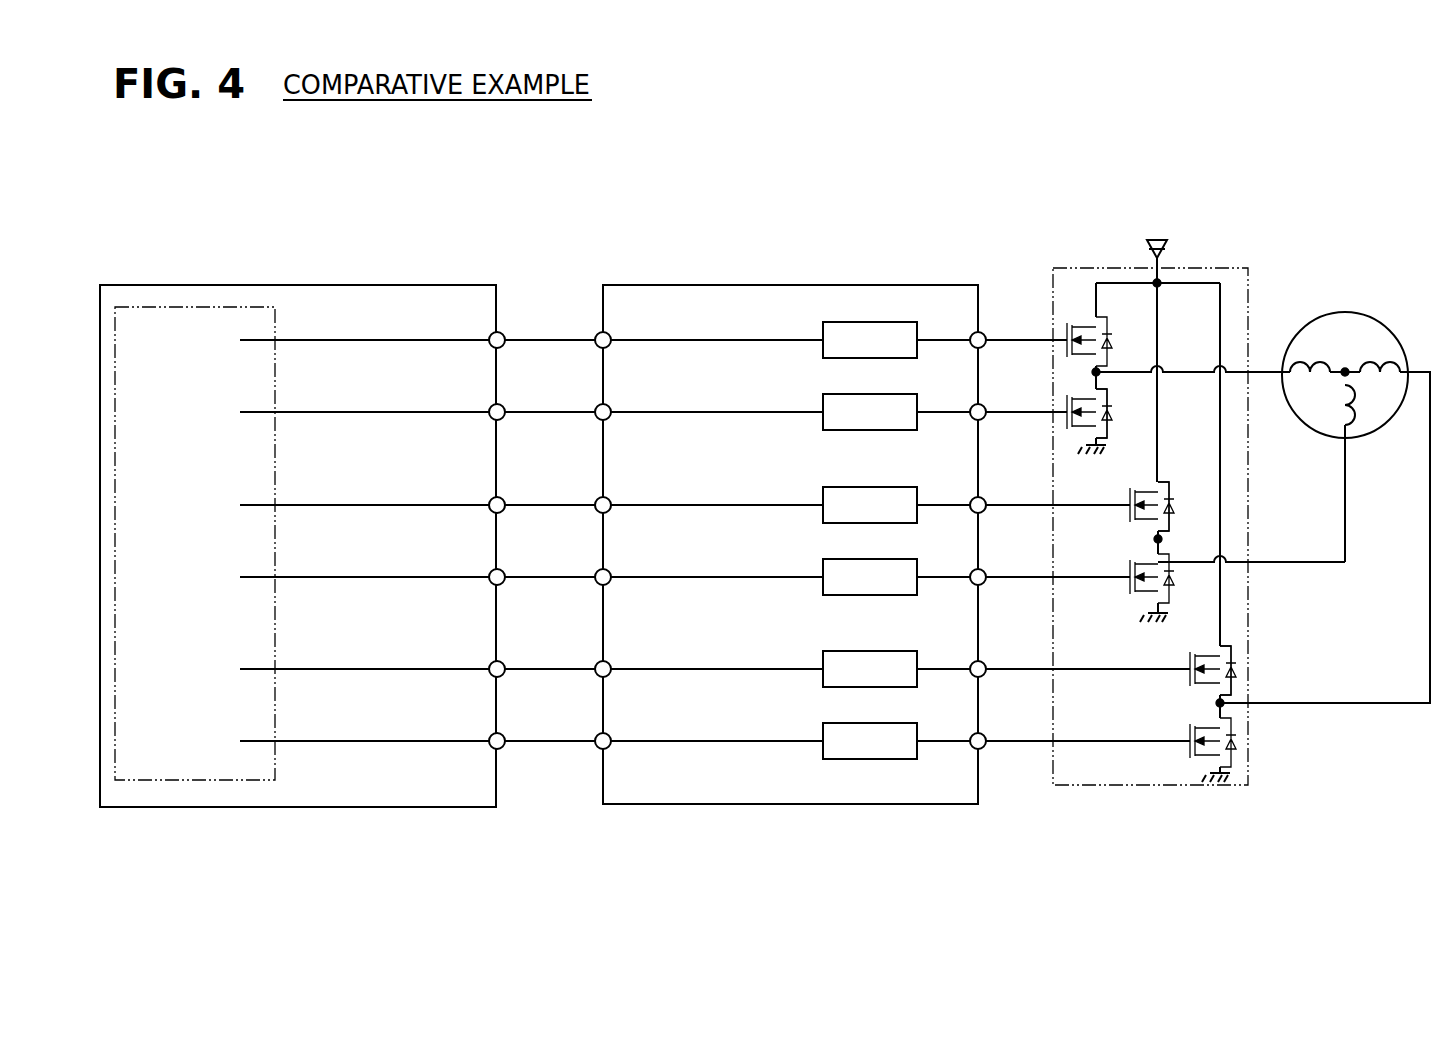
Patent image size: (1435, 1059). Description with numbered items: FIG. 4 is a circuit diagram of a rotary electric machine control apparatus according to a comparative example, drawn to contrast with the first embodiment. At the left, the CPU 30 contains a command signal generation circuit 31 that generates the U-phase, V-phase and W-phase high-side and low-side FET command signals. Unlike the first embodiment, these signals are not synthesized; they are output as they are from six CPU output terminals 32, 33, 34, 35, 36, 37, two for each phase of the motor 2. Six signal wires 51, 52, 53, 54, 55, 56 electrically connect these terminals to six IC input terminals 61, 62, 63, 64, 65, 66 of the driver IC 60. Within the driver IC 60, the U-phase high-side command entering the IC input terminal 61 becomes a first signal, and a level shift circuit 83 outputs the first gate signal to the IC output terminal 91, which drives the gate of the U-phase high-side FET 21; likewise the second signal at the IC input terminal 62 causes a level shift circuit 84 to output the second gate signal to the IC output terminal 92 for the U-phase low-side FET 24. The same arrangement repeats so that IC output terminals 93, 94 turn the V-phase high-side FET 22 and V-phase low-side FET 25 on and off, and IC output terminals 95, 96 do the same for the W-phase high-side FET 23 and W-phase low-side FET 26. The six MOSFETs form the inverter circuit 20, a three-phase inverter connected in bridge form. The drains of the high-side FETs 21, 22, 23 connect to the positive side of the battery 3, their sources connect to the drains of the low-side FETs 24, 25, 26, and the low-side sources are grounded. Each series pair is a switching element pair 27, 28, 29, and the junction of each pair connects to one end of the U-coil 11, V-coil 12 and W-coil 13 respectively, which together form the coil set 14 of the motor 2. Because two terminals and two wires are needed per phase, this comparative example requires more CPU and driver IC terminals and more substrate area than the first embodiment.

The motor 2 is at (1372, 311).
The battery 3 is at (1157, 238).
The U-coil 11 is at (1310, 362).
The V-coil 12 is at (1358, 408).
The W-coil 13 is at (1388, 362).
The coil set 14 is at (1352, 348).
The inverter circuit 20 is at (1217, 266).
The U-phase high-side FET 21 is at (1076, 321).
The V-phase high-side FET 22 is at (1138, 522).
The W-phase high-side FET 23 is at (1202, 653).
The U-phase low-side FET 24 is at (1074, 430).
The V-phase low-side FET 25 is at (1138, 592).
The W-phase low-side FET 26 is at (1200, 758).
The switching element pair 27 is at (1115, 391).
The switching element pair 28 is at (1182, 523).
The switching element pair 29 is at (1246, 689).
The CPU 30 is at (300, 284).
The command signal generation circuit 31 is at (189, 307).
The CPU output terminal 32 is at (503, 334).
The CPU output terminal 33 is at (503, 406).
The CPU output terminal 34 is at (503, 499).
The CPU output terminal 35 is at (503, 571).
The CPU output terminal 36 is at (503, 663).
The CPU output terminal 37 is at (503, 735).
The signal wire 51 is at (550, 341).
The signal wire 52 is at (550, 413).
The signal wire 53 is at (550, 506).
The signal wire 54 is at (550, 578).
The signal wire 55 is at (550, 670).
The signal wire 56 is at (550, 742).
The driver IC 60 is at (782, 283).
The IC input terminal 61 is at (597, 334).
The IC input terminal 62 is at (597, 406).
The IC input terminal 63 is at (597, 499).
The IC input terminal 64 is at (597, 571).
The IC input terminal 65 is at (597, 663).
The IC input terminal 66 is at (597, 735).
The level shift circuit 83 is at (897, 322).
The level shift circuit 84 is at (862, 430).
The IC output terminal 91 is at (985, 334).
The IC output terminal 92 is at (985, 406).
The IC output terminal 93 is at (985, 499).
The IC output terminal 94 is at (985, 571).
The IC output terminal 95 is at (985, 663).
The IC output terminal 96 is at (985, 735).